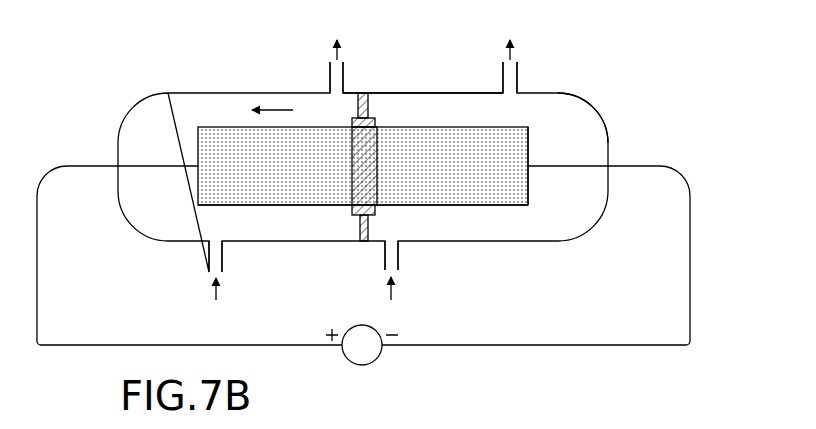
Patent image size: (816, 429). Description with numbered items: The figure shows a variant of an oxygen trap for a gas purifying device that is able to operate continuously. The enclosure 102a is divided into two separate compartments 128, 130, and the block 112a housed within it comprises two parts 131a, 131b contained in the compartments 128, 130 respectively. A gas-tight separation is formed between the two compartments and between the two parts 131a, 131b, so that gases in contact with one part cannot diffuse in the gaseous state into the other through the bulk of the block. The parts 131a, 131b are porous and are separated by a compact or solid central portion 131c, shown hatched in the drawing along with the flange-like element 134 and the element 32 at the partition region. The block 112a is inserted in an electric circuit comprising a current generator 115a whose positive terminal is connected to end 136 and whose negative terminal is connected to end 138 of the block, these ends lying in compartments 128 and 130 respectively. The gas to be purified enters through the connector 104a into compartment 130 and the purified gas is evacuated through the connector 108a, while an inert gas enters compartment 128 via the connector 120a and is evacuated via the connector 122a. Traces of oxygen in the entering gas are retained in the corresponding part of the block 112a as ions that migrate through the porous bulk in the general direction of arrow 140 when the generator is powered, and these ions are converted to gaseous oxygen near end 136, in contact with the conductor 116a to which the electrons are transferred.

The compartment 128 is at (190, 110).
The arrow 140 is at (267, 93).
The connector 122a is at (327, 78).
The enclosure 102a is at (415, 90).
The connector 108a is at (520, 70).
The compartment 130 is at (573, 103).
The current collector 32 is at (368, 107).
The end of the block 136 is at (207, 150).
The end of the block 138 is at (522, 143).
The conductor 116a is at (158, 165).
The part of the block 131a is at (200, 203).
The part of the block 131b is at (515, 190).
The central portion 131c is at (368, 170).
The collector flange 134 is at (357, 215).
The block 112a is at (526, 227).
The connector 120a is at (208, 262).
The connector 104a is at (398, 258).
The current generator 115a is at (372, 352).